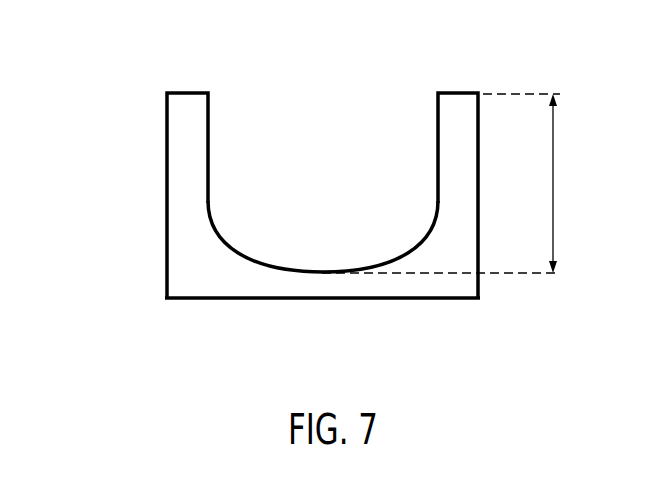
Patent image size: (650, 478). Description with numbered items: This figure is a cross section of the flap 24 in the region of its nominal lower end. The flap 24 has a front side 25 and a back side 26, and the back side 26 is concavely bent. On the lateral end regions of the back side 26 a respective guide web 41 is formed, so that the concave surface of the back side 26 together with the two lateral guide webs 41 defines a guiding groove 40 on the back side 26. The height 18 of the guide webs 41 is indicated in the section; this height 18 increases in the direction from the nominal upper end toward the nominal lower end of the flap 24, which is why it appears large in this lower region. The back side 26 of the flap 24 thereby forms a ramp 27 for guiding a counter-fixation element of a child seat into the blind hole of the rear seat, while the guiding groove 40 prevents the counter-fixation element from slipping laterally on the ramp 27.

The height 18 is at (553, 188).
The flap 24 is at (261, 208).
The front side 25 is at (384, 300).
The back side 26 is at (323, 155).
The ramp 27 is at (273, 267).
The guiding groove 40 is at (355, 142).
The guide web 41 is at (183, 117).